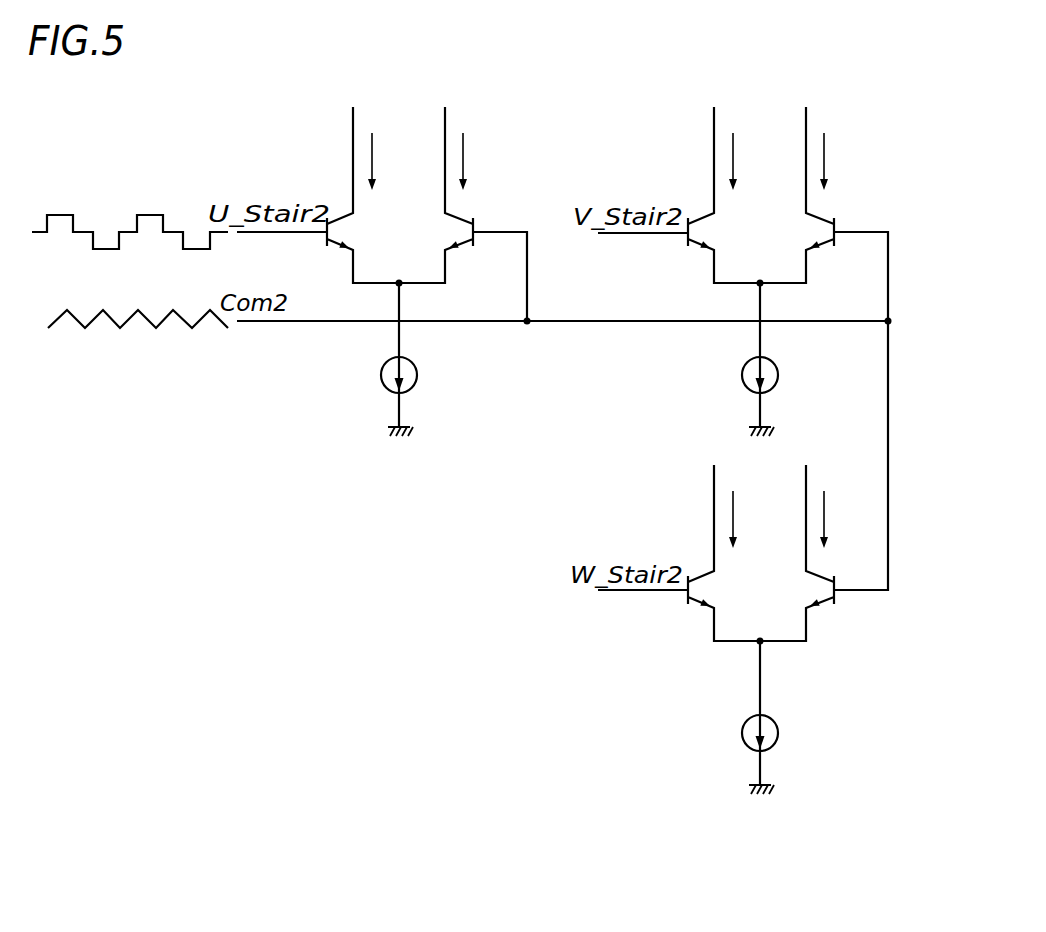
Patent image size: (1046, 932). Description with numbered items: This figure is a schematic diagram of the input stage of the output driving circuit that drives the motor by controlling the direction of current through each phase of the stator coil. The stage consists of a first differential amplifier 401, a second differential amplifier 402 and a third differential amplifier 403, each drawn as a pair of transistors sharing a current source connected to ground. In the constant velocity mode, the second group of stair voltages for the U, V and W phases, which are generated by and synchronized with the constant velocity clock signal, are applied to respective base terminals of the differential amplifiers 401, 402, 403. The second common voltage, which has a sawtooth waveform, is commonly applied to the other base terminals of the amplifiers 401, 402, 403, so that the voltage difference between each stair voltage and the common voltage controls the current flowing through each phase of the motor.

The first differential amplifier 401 is at (446, 271).
The second differential amplifier 402 is at (806, 271).
The third differential amplifier 403 is at (748, 557).